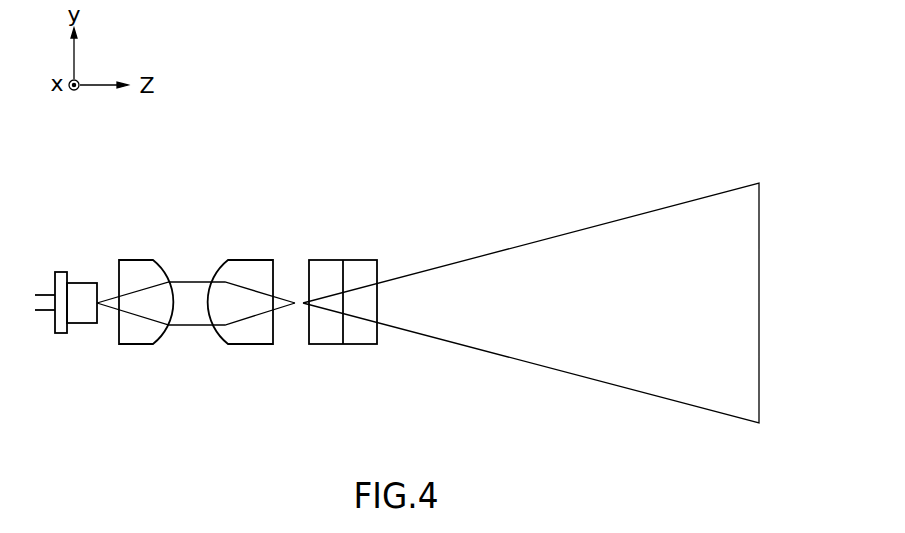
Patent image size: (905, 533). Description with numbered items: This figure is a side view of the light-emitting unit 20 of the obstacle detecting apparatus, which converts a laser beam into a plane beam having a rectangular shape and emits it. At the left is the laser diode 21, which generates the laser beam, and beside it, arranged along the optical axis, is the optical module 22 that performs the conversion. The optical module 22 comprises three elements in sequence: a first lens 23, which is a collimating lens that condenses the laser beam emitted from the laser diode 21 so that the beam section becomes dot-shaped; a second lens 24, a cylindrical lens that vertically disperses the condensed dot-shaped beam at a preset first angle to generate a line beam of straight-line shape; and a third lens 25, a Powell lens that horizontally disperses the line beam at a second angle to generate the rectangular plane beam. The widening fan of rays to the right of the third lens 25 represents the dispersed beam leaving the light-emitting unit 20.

The light-emitting unit 20 is at (468, 98).
The laser diode 21 is at (82, 282).
The optical module 22 is at (343, 155).
The first lens 23 is at (142, 260).
The second lens 24 is at (250, 260).
The third lens 25 is at (347, 260).